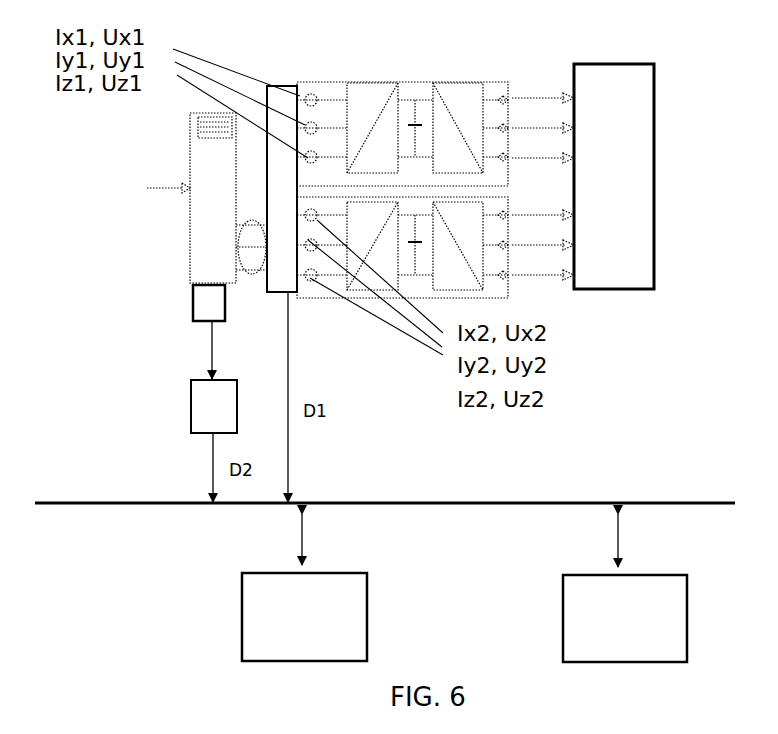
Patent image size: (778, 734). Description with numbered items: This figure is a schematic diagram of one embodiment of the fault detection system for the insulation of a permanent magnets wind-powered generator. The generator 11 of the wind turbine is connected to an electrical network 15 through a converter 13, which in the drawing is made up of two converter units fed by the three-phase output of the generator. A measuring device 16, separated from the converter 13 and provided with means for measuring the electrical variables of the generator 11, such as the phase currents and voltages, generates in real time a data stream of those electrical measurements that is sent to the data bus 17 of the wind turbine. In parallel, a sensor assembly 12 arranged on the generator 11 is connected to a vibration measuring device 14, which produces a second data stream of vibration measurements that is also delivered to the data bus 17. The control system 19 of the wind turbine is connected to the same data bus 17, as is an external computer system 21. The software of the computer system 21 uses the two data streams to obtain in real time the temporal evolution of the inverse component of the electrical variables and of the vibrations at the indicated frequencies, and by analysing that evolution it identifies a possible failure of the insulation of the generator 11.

The generator 11 is at (197, 162).
The sensor assembly 12 is at (204, 308).
The converter 13 is at (377, 93).
The vibration measuring device 14 is at (214, 441).
The electrical network 15 is at (614, 176).
The measuring device 16 is at (283, 86).
The data bus 17 is at (54, 498).
The control system 19 is at (304, 587).
The computer system 21 is at (625, 588).